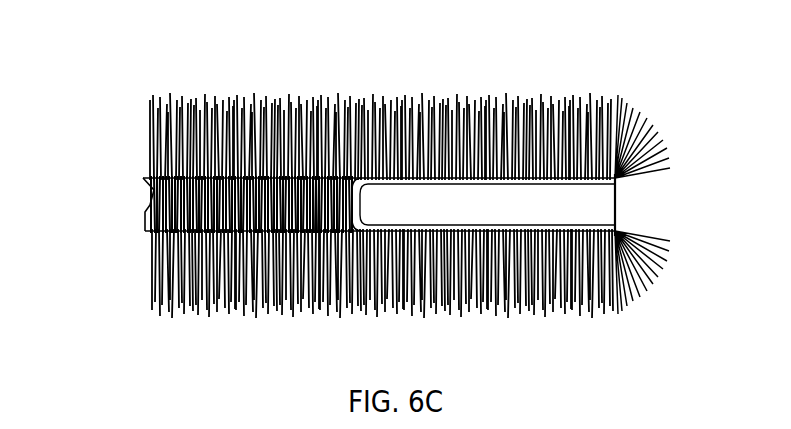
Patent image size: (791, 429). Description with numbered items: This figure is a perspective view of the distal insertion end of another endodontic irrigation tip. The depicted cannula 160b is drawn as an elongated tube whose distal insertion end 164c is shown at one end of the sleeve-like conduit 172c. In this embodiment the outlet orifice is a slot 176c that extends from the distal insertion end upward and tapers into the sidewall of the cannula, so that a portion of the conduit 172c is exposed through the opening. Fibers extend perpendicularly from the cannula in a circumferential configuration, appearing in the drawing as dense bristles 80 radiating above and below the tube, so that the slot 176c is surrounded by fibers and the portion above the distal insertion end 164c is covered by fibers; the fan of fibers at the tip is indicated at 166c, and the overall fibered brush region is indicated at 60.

The brush 60 is at (450, 120).
The bristles 80 is at (348, 105).
The cannula 160b is at (150, 177).
The distal insertion end 164c is at (618, 229).
The upper end bristles 166c is at (618, 180).
The conduit 172c is at (497, 215).
The slot 176c is at (600, 203).